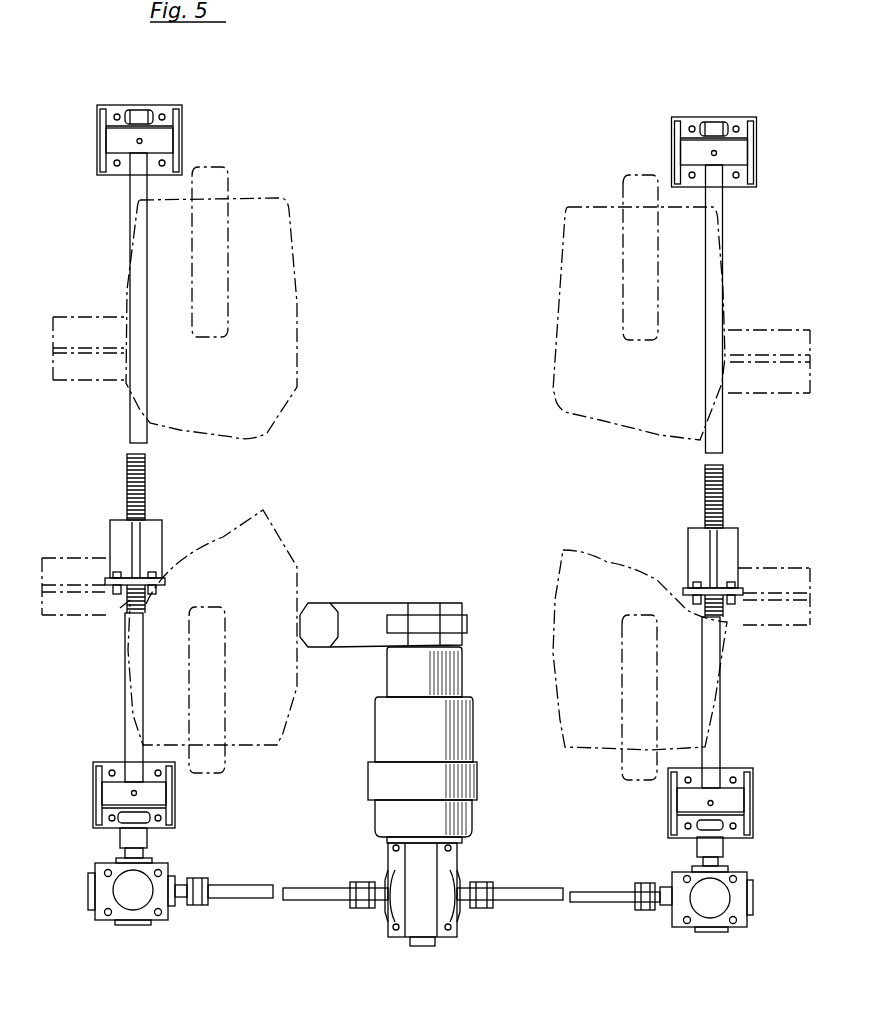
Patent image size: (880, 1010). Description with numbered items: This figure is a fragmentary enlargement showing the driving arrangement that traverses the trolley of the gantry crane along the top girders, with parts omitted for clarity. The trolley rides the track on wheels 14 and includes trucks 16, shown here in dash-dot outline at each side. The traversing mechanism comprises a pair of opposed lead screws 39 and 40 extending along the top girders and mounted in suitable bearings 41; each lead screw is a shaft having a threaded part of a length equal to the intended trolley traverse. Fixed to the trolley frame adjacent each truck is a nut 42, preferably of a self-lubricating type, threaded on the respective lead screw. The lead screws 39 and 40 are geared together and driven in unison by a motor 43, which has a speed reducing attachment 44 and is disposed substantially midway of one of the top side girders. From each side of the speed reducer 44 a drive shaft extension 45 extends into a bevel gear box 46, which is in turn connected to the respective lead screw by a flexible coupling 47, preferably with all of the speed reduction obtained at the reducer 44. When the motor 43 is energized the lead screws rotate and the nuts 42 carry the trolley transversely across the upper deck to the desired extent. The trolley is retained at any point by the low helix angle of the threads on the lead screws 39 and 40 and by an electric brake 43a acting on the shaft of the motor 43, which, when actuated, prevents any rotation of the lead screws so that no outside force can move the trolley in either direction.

The wheels 14 is at (216, 190).
The trucks 16 is at (272, 332).
The lead screw 39 is at (147, 484).
The lead screw 40 is at (705, 488).
The bearings 41 is at (696, 147).
The nut 42 is at (147, 552).
The motor 43 is at (436, 746).
The electric brake 43a is at (383, 606).
The speed reducing attachment 44 is at (418, 860).
The drive shaft extension 45 is at (540, 895).
The bevel gear box 46 is at (684, 905).
The flexible coupling 47 is at (700, 826).